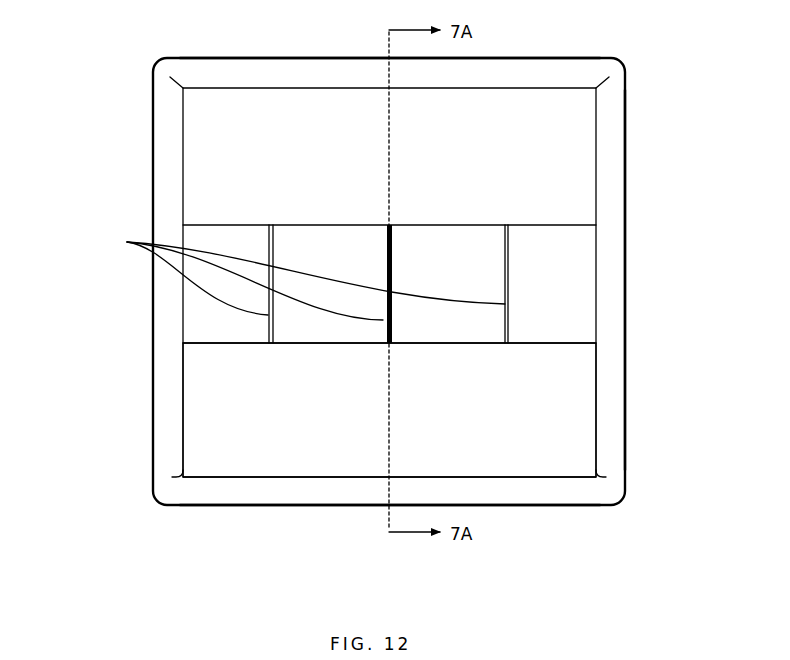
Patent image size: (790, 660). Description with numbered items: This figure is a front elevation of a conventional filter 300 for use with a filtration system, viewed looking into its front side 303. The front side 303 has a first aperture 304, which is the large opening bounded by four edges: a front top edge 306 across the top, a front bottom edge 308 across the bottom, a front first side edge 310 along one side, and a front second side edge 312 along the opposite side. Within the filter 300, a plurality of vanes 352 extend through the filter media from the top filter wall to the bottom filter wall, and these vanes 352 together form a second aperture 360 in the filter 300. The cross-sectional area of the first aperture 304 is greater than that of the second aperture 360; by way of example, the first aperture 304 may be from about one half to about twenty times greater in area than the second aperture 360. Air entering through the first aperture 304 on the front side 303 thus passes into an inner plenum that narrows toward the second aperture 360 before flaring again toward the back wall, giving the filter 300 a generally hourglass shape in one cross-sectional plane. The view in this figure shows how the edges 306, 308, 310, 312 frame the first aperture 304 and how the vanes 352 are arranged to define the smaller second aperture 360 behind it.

The filter 300 is at (126, 44).
The front top edge 306 is at (538, 68).
The front second side edge 312 is at (626, 188).
The front side 303 is at (572, 287).
The first aperture 304 is at (572, 405).
The front first side edge 310 is at (156, 362).
The second aperture 360 is at (296, 336).
The vanes 352 is at (297, 276).
The front bottom edge 308 is at (372, 498).